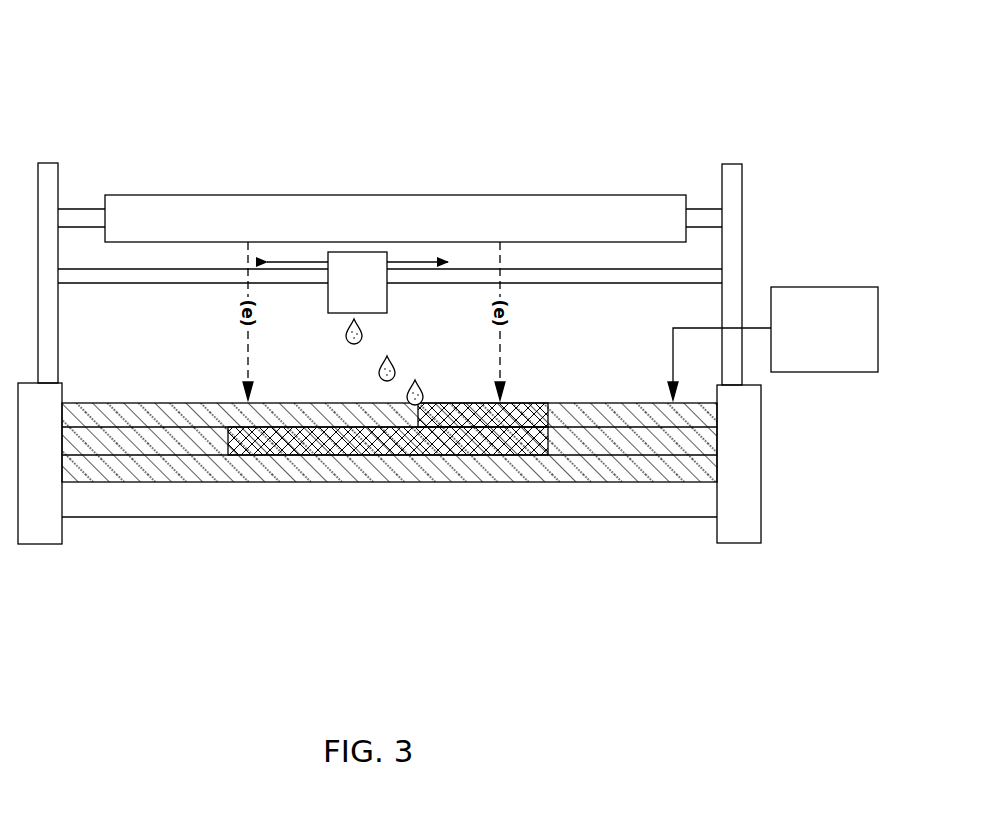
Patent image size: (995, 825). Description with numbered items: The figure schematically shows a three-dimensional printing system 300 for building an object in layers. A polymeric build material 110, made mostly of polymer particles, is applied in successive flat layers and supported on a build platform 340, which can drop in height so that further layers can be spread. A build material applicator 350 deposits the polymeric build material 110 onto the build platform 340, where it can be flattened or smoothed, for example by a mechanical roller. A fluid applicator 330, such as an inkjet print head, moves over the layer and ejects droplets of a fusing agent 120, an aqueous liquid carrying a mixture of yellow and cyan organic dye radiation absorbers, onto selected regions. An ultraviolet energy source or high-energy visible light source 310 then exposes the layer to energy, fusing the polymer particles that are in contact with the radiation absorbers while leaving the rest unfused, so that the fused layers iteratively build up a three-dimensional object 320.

The three-dimensional printing system 300 is at (157, 63).
The ultraviolet energy source or high-energy visible light source 310 is at (390, 215).
The fluid applicator 330 is at (357, 282).
The build material applicator 350 is at (773, 343).
The build platform 340 is at (389, 501).
The three-dimensional object 320 is at (353, 443).
The polymeric build material 110 is at (130, 435).
The fusing agent 120 is at (345, 328).